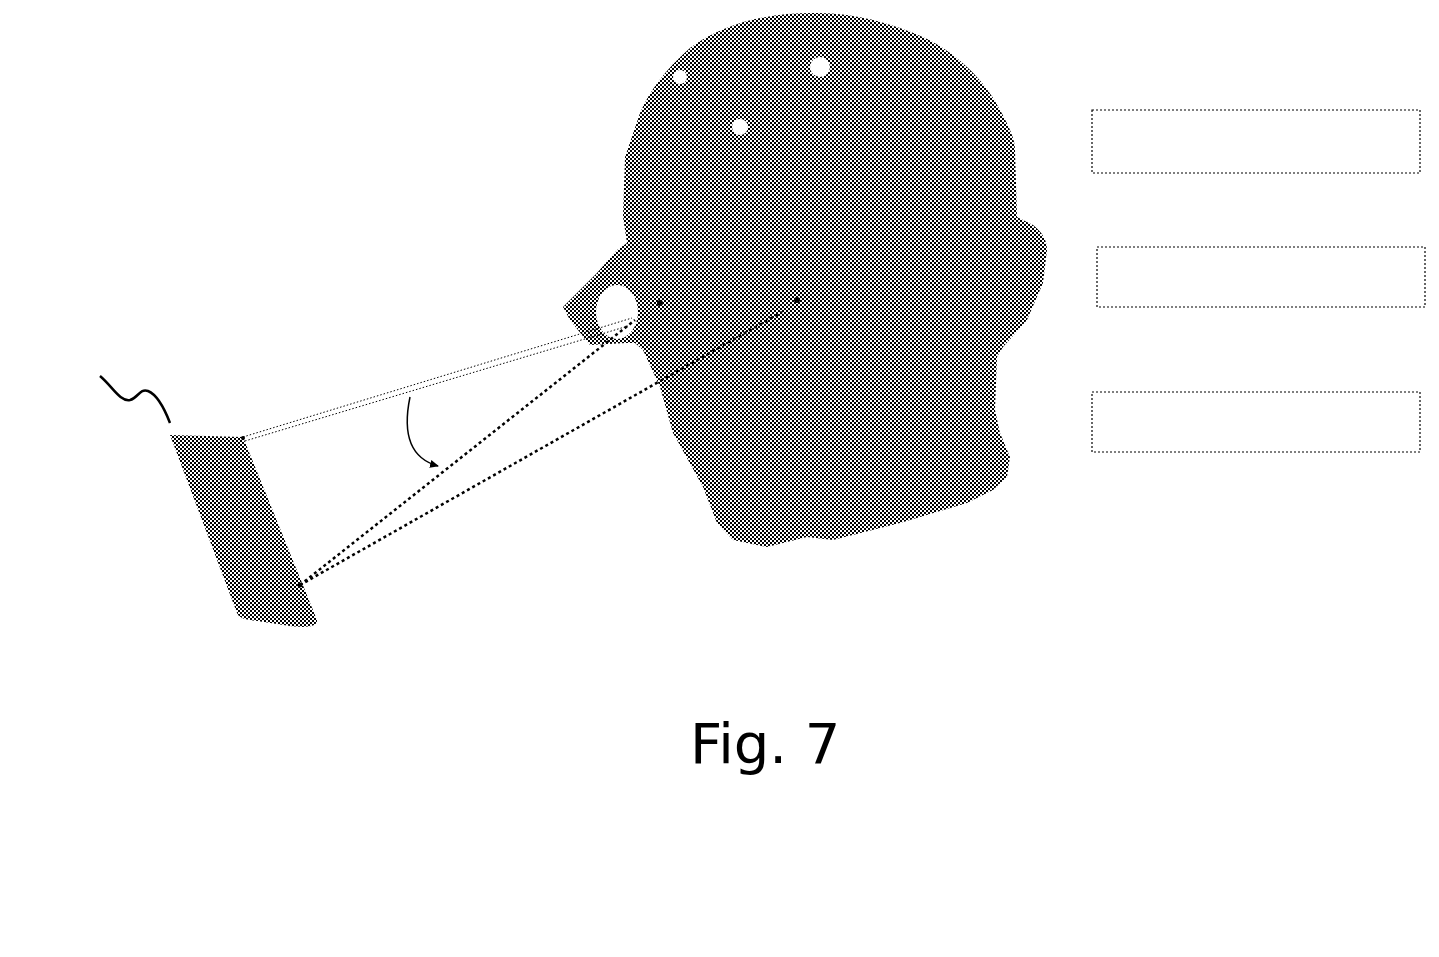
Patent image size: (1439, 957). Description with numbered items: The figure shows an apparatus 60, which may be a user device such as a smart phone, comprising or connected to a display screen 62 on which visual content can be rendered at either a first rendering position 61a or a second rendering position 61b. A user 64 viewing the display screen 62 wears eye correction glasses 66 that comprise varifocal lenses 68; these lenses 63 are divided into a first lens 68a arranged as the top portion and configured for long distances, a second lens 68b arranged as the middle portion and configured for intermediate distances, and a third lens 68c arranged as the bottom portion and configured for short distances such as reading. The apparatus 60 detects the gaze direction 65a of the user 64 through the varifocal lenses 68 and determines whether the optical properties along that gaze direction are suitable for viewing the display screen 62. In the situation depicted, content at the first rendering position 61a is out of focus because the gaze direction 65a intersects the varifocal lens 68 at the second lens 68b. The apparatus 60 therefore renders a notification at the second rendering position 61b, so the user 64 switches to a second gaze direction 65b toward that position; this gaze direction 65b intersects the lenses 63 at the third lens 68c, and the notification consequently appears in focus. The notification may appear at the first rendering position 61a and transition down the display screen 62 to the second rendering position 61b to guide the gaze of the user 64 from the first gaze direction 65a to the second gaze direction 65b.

The apparatus 60 is at (118, 378).
The first rendering position 61a is at (228, 443).
The second rendering position 61b is at (300, 585).
The display screen 62 is at (207, 480).
The lenses 63 is at (628, 307).
The user 64 is at (667, 112).
The gaze direction 65a is at (312, 433).
The second gaze direction 65b is at (510, 473).
The eye correction glasses 66 is at (573, 310).
The varifocal lenses 68 is at (767, 330).
The first lens 68a is at (787, 284).
The second lens 68b is at (817, 306).
The third lens 68c is at (787, 322).